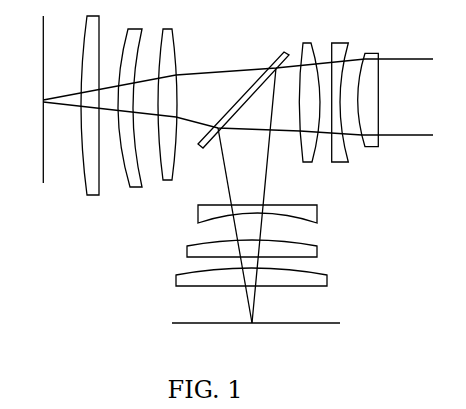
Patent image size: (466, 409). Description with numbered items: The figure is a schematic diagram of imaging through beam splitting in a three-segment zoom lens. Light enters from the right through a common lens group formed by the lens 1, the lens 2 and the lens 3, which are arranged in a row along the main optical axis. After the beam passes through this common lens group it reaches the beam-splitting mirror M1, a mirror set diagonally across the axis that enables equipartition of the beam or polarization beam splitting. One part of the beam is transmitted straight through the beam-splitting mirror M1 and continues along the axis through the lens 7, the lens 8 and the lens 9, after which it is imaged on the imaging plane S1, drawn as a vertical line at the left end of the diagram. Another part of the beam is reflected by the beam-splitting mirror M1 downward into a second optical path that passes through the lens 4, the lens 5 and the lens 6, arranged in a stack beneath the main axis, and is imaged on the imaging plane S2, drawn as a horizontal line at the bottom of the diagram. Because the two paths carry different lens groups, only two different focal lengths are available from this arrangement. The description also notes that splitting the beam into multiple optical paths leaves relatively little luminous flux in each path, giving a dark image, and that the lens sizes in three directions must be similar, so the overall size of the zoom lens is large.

The optical lens 1 is at (368, 90).
The optical lens 2 is at (340, 92).
The optical lens 3 is at (309, 95).
The optical lens 4 is at (275, 213).
The optical lens 5 is at (269, 248).
The optical lens 6 is at (264, 277).
The optical lens 7 is at (167, 121).
The optical lens 8 is at (130, 122).
The optical lens 9 is at (90, 118).
The beam-splitting mirror M1 is at (243, 100).
The imaging plane S1 is at (28, 99).
The imaging plane S2 is at (256, 336).